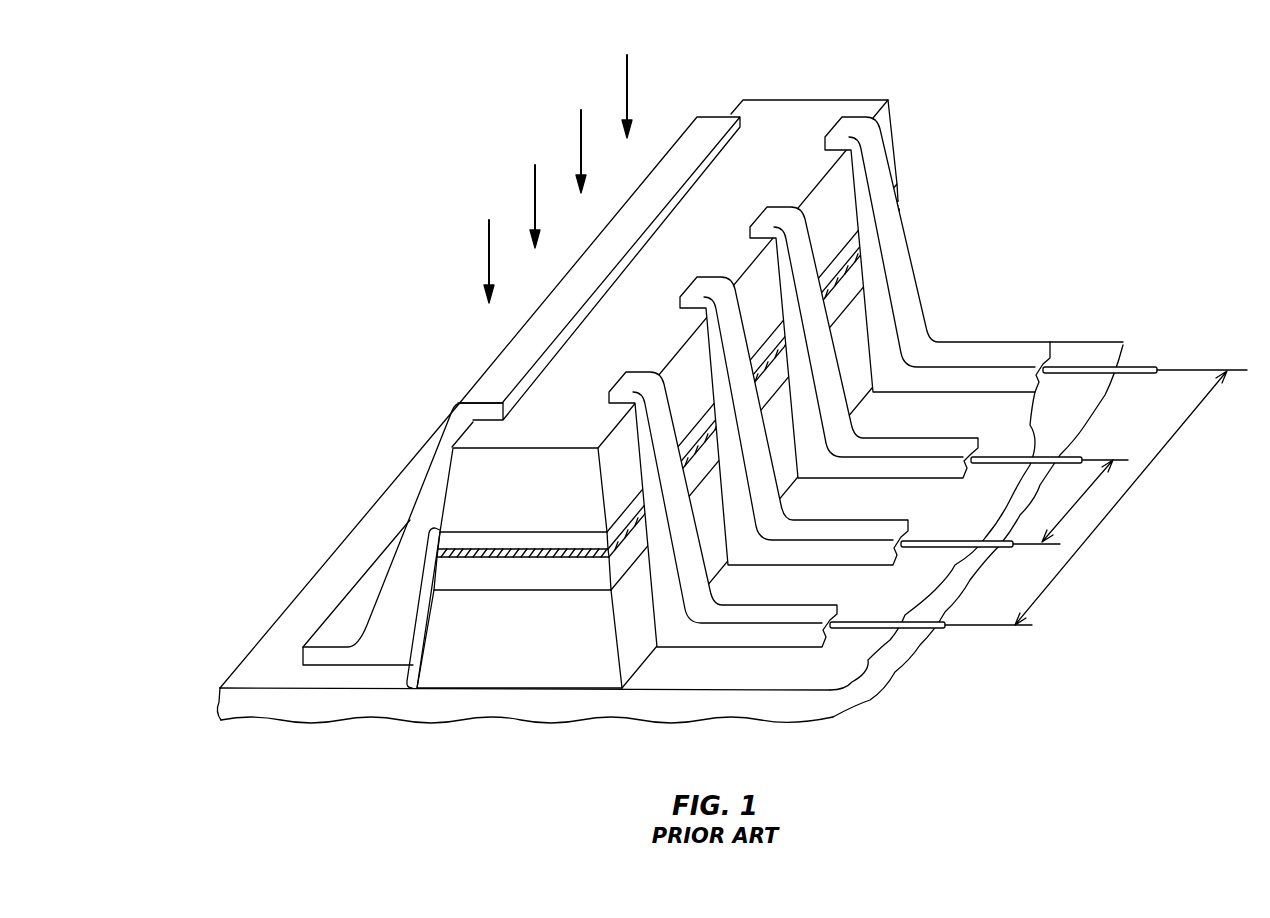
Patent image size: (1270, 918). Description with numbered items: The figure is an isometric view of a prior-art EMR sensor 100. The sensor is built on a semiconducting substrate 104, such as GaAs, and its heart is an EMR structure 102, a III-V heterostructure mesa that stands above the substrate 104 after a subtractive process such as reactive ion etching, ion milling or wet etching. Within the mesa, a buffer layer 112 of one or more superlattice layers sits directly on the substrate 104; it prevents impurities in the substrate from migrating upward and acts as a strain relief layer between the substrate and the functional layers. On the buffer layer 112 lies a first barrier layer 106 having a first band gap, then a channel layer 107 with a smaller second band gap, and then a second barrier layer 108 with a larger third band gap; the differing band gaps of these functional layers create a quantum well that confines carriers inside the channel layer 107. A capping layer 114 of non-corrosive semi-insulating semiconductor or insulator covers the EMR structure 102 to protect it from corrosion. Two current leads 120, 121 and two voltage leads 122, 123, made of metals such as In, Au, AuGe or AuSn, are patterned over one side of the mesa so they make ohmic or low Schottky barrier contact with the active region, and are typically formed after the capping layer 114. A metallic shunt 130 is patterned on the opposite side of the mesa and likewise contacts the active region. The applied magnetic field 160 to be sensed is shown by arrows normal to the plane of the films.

The EMR sensor 100 is at (732, 408).
The EMR structure 102 is at (421, 612).
The semiconducting substrate 104 is at (797, 707).
The first barrier layer 106 is at (513, 578).
The channel layer 107 is at (538, 550).
The second barrier layer 108 is at (478, 540).
The buffer layer 112 is at (577, 672).
The capping layer 114 is at (518, 465).
The current lead 120 is at (1025, 348).
The current lead 121 is at (792, 613).
The voltage lead 122 is at (950, 440).
The voltage lead 123 is at (870, 525).
The metallic shunt 130 is at (430, 502).
The applied magnetic field 160 is at (487, 243).